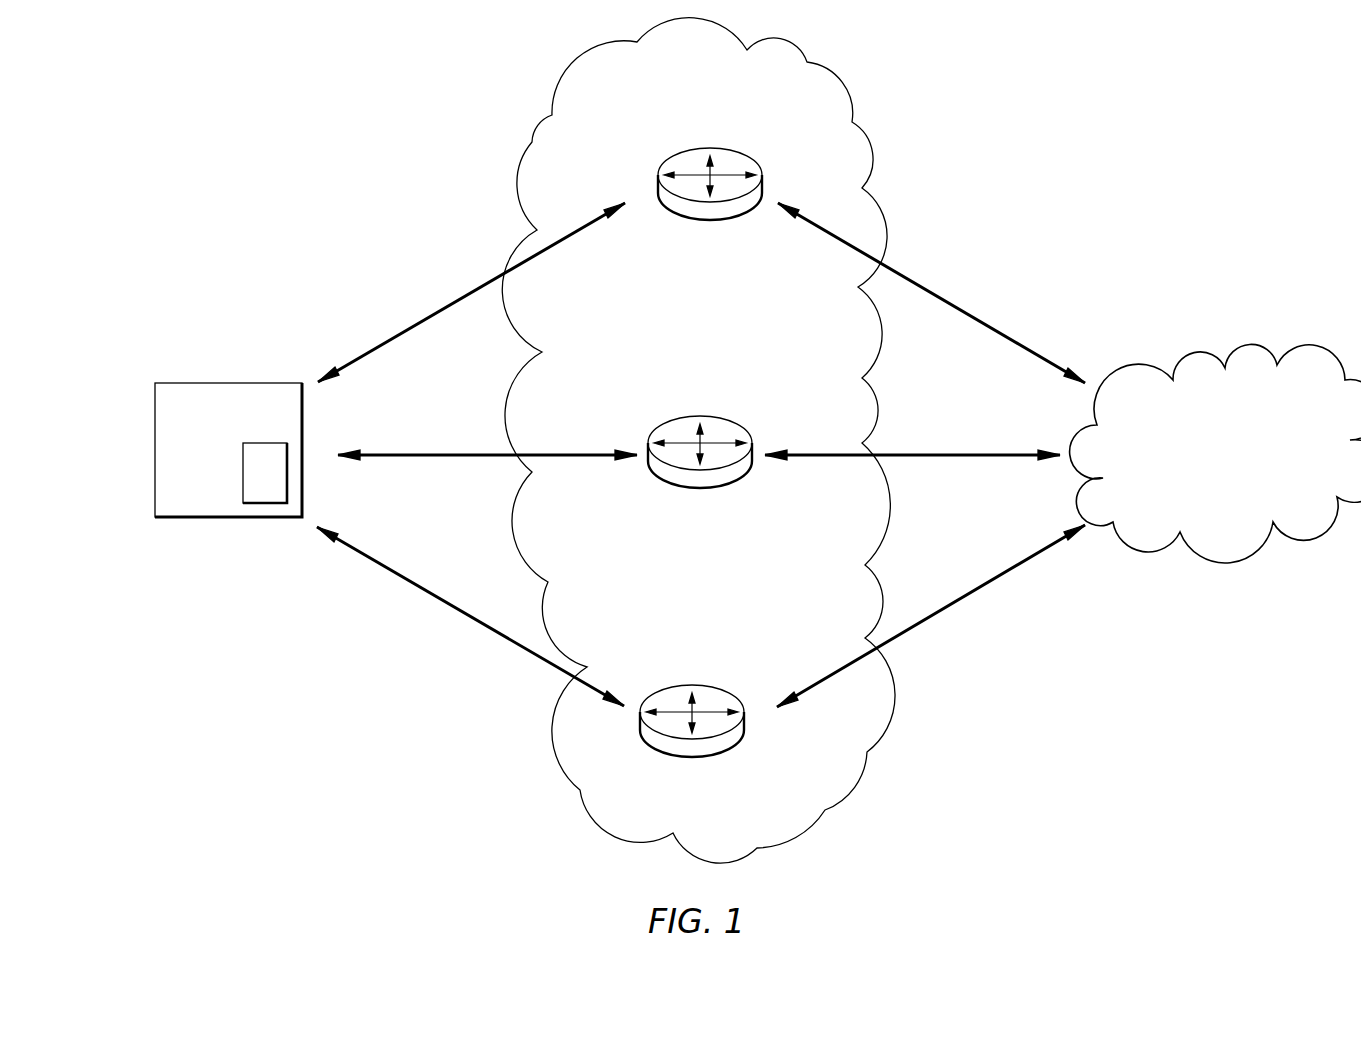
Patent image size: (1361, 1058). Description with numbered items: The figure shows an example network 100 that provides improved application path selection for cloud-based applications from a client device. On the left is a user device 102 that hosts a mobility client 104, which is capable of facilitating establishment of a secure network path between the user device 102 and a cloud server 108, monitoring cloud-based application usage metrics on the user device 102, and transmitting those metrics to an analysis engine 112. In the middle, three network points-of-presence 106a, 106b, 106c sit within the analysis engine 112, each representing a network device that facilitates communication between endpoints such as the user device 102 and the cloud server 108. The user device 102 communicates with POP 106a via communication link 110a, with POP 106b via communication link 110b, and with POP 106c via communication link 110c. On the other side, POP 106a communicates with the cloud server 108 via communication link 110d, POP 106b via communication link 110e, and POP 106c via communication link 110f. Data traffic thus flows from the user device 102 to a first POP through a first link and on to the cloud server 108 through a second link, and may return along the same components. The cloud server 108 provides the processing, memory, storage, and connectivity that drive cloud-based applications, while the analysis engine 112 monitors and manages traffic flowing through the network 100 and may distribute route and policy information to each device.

The network 100 is at (1082, 128).
The user device 102 is at (155, 402).
The mobility client 104 is at (260, 503).
The network point-of-presence (POP) 106a is at (713, 220).
The network point-of-presence (POP) 106b is at (730, 487).
The network point-of-presence (POP) 106c is at (713, 753).
The cloud server 108 is at (1243, 470).
The communication link 110a is at (440, 308).
The communication link 110b is at (455, 453).
The communication link 110c is at (415, 585).
The communication link 110d is at (945, 297).
The communication link 110e is at (932, 452).
The communication link 110f is at (963, 597).
The analysis engine 112 is at (704, 82).